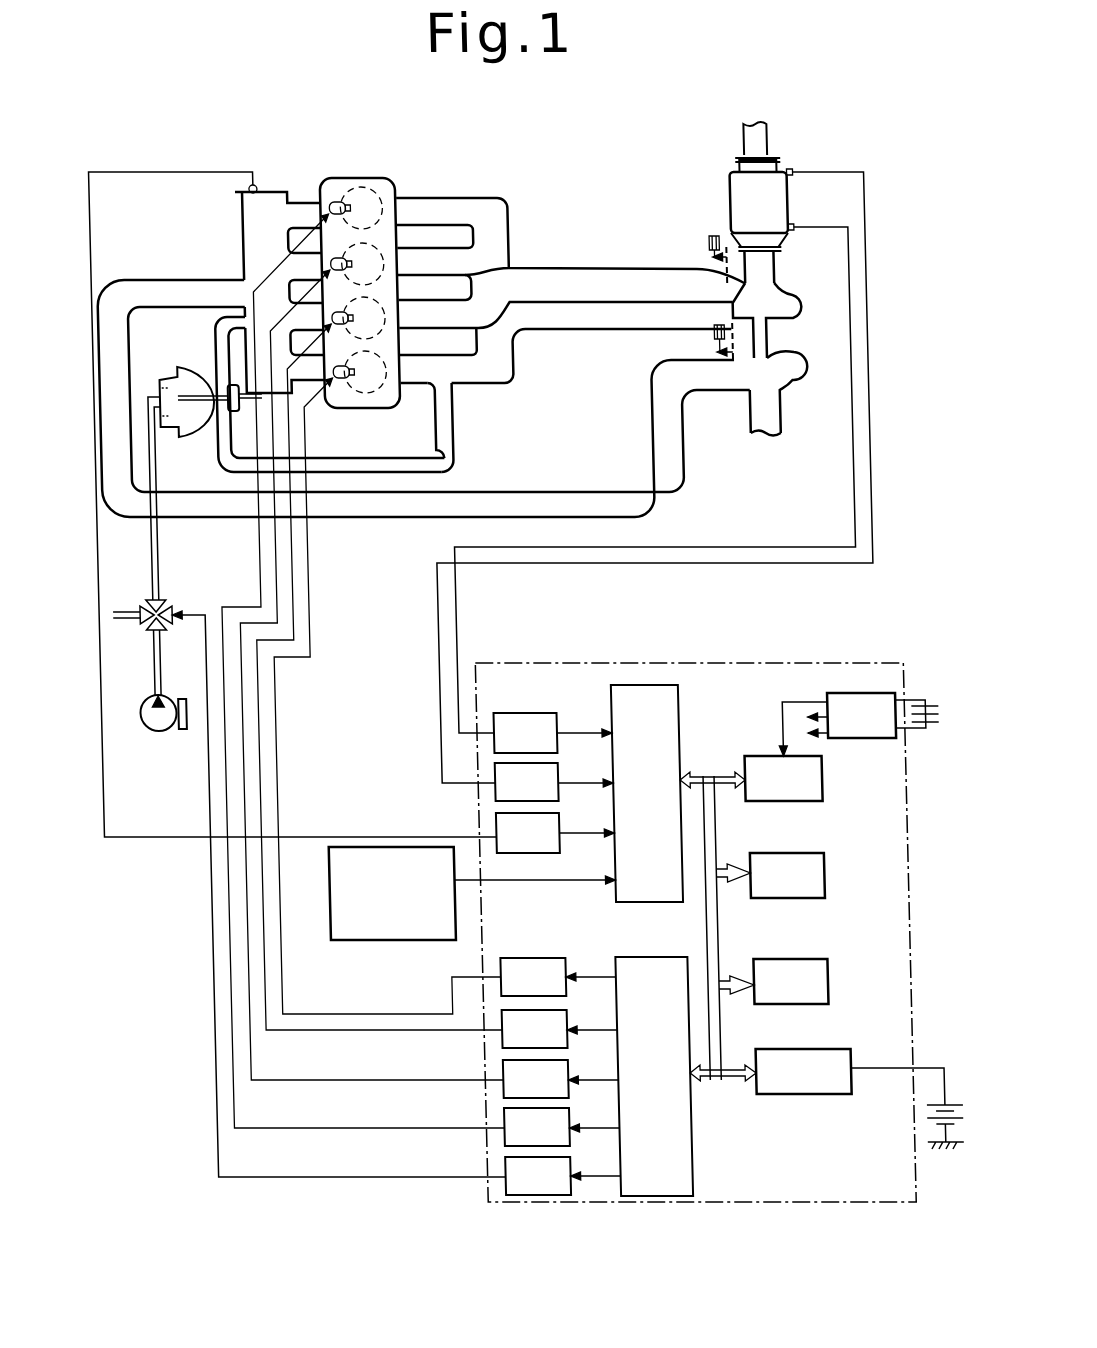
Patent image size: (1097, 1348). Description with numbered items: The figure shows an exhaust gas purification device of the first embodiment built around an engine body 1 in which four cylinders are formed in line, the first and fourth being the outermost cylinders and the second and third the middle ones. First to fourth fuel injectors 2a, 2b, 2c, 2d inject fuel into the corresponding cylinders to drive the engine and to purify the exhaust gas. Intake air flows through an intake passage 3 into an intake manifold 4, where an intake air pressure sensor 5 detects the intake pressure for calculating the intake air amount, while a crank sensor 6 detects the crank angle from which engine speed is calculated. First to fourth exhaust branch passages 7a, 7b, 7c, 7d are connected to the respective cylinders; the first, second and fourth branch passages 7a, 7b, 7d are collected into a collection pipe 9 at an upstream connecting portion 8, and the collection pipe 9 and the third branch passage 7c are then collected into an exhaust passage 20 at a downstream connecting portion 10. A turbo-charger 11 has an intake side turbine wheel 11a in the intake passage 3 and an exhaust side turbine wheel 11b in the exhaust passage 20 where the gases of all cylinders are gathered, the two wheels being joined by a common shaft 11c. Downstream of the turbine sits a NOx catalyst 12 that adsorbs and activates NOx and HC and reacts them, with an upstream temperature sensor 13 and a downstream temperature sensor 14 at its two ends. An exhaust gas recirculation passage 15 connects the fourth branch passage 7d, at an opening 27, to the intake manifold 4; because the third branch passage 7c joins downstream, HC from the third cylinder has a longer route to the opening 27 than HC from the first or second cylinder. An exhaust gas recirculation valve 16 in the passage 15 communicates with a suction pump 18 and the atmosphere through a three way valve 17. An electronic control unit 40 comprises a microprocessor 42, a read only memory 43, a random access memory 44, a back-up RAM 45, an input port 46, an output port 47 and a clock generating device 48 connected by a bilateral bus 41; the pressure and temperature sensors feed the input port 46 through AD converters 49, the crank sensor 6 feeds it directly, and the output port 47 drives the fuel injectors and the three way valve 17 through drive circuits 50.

The engine body 1 is at (386, 173).
The first fuel injector 2a is at (342, 203).
The second fuel injector 2b is at (347, 261).
The third fuel injector 2c is at (348, 316).
The fourth fuel injector 2d is at (347, 392).
The intake passage 3 is at (175, 292).
The intake manifold 4 is at (285, 196).
The intake air pressure sensor 5 is at (250, 189).
The crank sensor 6 is at (350, 942).
The first exhaust branch passage 7a is at (468, 207).
The second exhaust branch passage 7b is at (449, 261).
The third exhaust branch passage 7c is at (590, 287).
The fourth exhaust branch passage 7d is at (476, 394).
The upstream connecting portion 8 is at (532, 348).
The collection pipe 9 is at (588, 324).
The downstream connecting portion 10 is at (728, 273).
The turbo-charger 11 is at (796, 291).
The intake side turbine wheel 11a is at (819, 428).
The exhaust side turbine wheel 11b is at (790, 306).
The common shaft 11c is at (800, 376).
The NOx catalyst 12 is at (735, 190).
The upstream temperature sensor 13 is at (798, 226).
The downstream temperature sensor 14 is at (796, 170).
The exhaust gas recirculation passage 15 is at (452, 466).
The exhaust gas recirculation valve 16 is at (186, 378).
The three way valve 17 is at (166, 606).
The suction pump 18 is at (156, 732).
The exhaust passage 20 is at (779, 284).
The opening of the exhaust gas recirculation passage 27 is at (436, 386).
The electronic control unit 40 is at (469, 838).
The bilateral bus 41 is at (708, 772).
The microprocessor 42 is at (806, 801).
The read only memory 43 is at (812, 898).
The random access memory 44 is at (830, 981).
The back-up RAM 45 is at (810, 1094).
The input port 46 is at (680, 702).
The output port 47 is at (680, 1182).
The clock generating device 48 is at (850, 738).
The AD converter 49 is at (552, 819).
The drive circuit 50 is at (566, 1176).